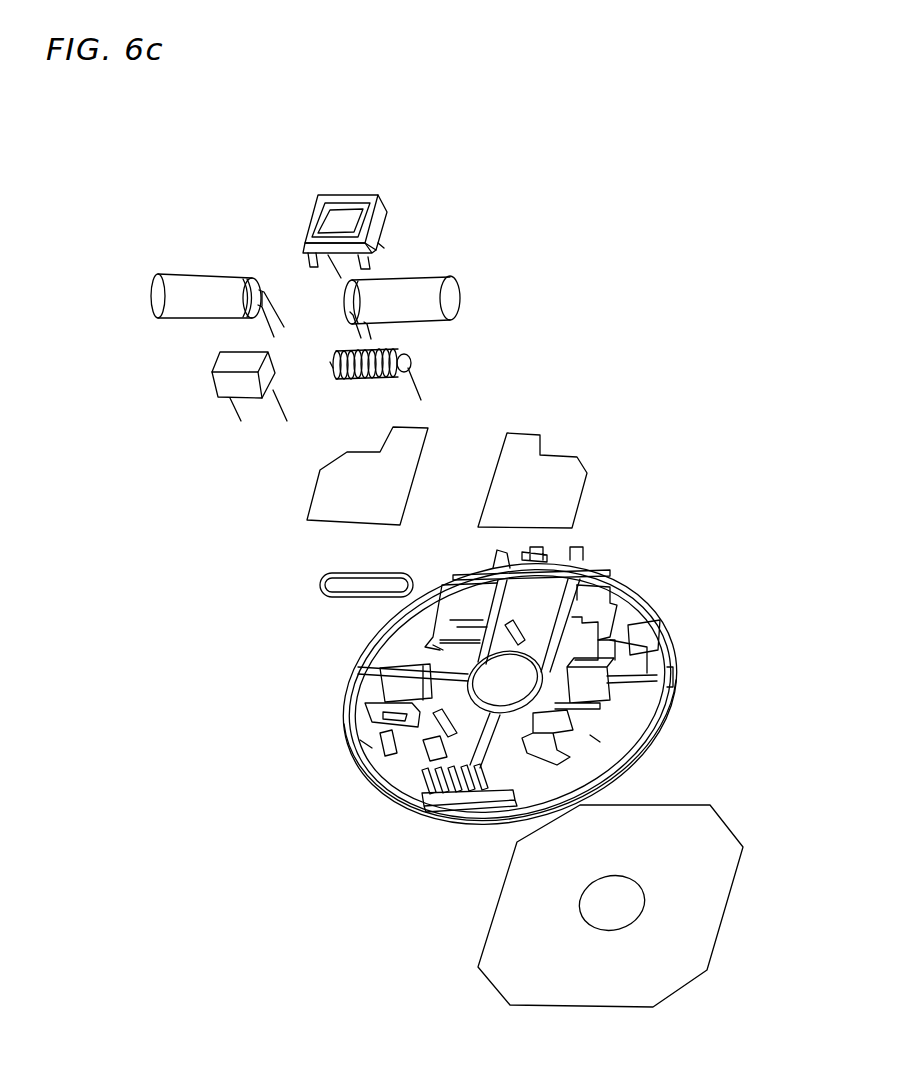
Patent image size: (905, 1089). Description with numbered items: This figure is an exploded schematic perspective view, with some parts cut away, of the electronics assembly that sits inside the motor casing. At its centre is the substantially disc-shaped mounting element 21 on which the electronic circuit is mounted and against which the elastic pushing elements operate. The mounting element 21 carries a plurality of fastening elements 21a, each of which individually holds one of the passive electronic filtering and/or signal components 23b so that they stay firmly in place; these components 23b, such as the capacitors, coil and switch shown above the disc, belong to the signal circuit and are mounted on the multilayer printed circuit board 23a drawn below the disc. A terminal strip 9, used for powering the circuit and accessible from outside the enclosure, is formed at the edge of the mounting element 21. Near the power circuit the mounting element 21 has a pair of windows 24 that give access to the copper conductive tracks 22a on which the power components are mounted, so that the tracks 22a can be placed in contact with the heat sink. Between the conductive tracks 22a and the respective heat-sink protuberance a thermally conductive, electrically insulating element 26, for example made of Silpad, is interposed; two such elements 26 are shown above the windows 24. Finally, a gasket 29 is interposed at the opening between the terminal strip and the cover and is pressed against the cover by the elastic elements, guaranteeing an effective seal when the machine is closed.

The passive electronic components 23b is at (420, 297).
The thermally conductive, electrically insulating element 26 is at (353, 490).
The gasket 29 is at (318, 582).
The mounting element 21 is at (670, 672).
The conductive tracks 22a is at (632, 620).
The windows 24 is at (643, 635).
The fastening elements 21a is at (593, 735).
The terminal strip 9 is at (430, 790).
The multilayer printed circuit board 23a is at (737, 912).